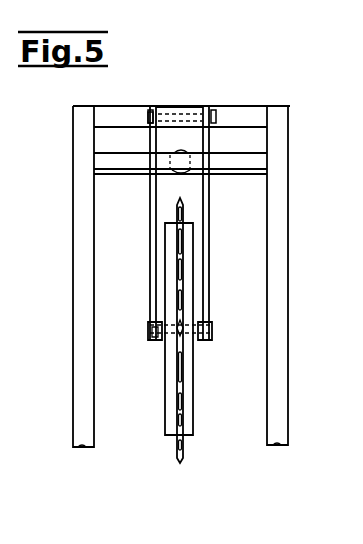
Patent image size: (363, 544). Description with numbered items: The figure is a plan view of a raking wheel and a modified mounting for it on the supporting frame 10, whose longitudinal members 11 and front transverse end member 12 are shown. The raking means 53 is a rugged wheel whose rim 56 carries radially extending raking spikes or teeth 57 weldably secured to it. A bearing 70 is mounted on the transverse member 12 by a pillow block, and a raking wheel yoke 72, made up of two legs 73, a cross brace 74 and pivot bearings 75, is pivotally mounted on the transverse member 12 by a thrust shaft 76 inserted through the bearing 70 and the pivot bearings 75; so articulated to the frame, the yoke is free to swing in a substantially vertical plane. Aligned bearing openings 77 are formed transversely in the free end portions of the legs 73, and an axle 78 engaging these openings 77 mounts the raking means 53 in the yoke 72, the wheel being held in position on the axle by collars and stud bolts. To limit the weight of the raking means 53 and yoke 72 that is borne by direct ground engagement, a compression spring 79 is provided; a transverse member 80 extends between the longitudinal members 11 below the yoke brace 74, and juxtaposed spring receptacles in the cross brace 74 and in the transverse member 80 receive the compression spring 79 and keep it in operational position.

The supporting frame 10 is at (70, 250).
The longitudinal members 11 is at (280, 277).
The transverse end member 12 is at (246, 110).
The raking means 53 is at (194, 425).
The rim 56 is at (165, 436).
The raking spikes or teeth 57 is at (177, 455).
The bearing 70 is at (190, 107).
The raking wheel yoke 72 is at (210, 215).
The legs 73 is at (150, 266).
The cross brace 74 is at (163, 176).
The pivot bearings 75 is at (156, 108).
The thrust shaft 76 is at (150, 110).
The bearing openings 77 is at (148, 326).
The axle 78 is at (150, 335).
The compression spring 79 is at (190, 163).
The transverse member 80 is at (258, 165).